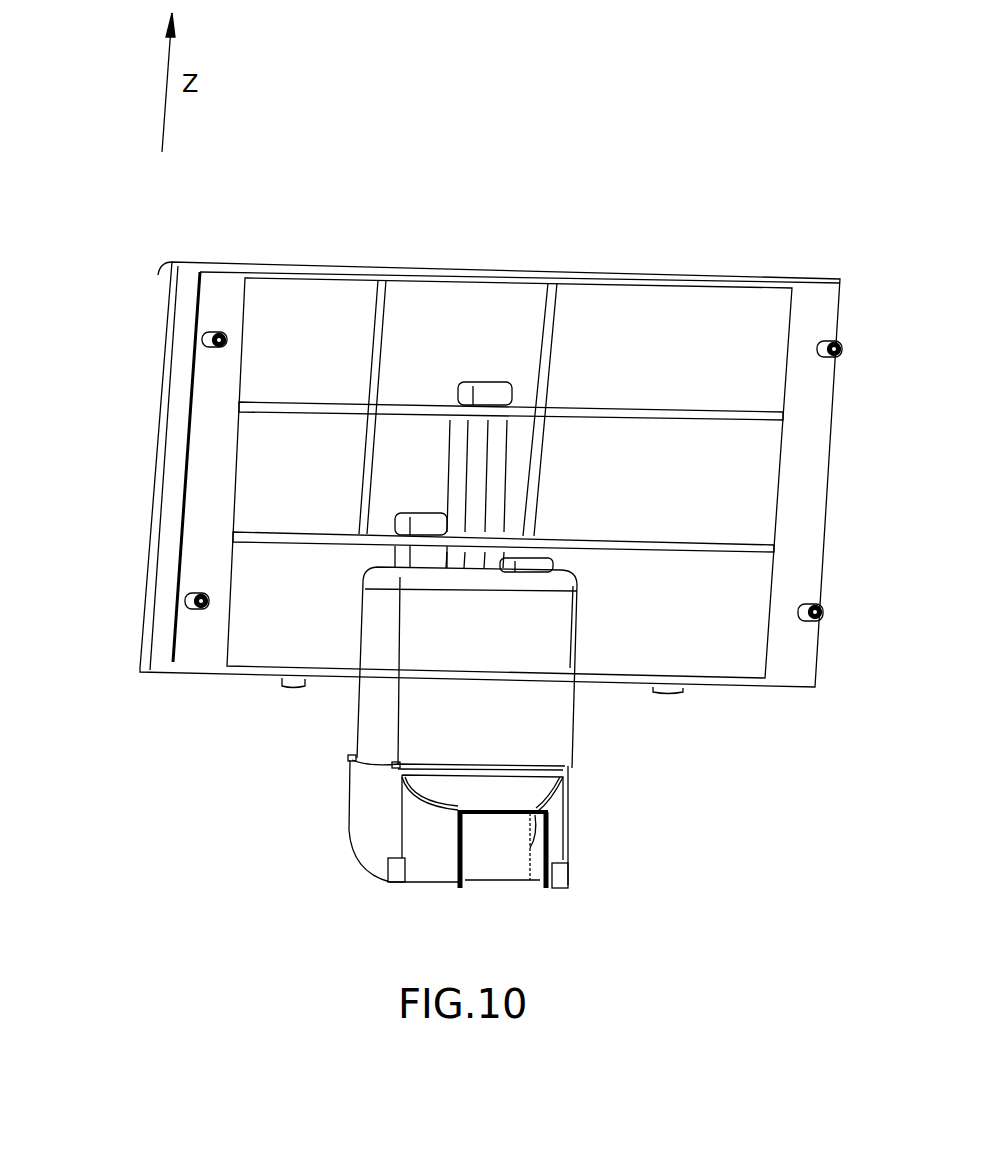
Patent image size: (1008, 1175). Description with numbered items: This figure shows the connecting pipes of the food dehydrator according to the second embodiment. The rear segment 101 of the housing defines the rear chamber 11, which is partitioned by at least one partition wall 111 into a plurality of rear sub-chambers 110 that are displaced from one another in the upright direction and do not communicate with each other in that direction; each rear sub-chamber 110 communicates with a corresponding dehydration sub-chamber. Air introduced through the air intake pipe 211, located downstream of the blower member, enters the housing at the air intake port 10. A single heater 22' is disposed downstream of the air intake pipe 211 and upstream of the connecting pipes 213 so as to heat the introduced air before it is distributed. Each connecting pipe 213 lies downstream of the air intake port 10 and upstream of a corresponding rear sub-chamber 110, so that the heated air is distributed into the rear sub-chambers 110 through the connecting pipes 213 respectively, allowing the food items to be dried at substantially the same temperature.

The air intake port 10 is at (341, 695).
The rear segment 101 is at (638, 268).
The rear chamber 11 is at (92, 350).
The rear sub-chambers 110 is at (297, 360).
The partition wall 111 is at (602, 410).
The connecting pipes 213 is at (532, 560).
The heater 22' is at (519, 676).
The air intake pipe 211 is at (362, 808).